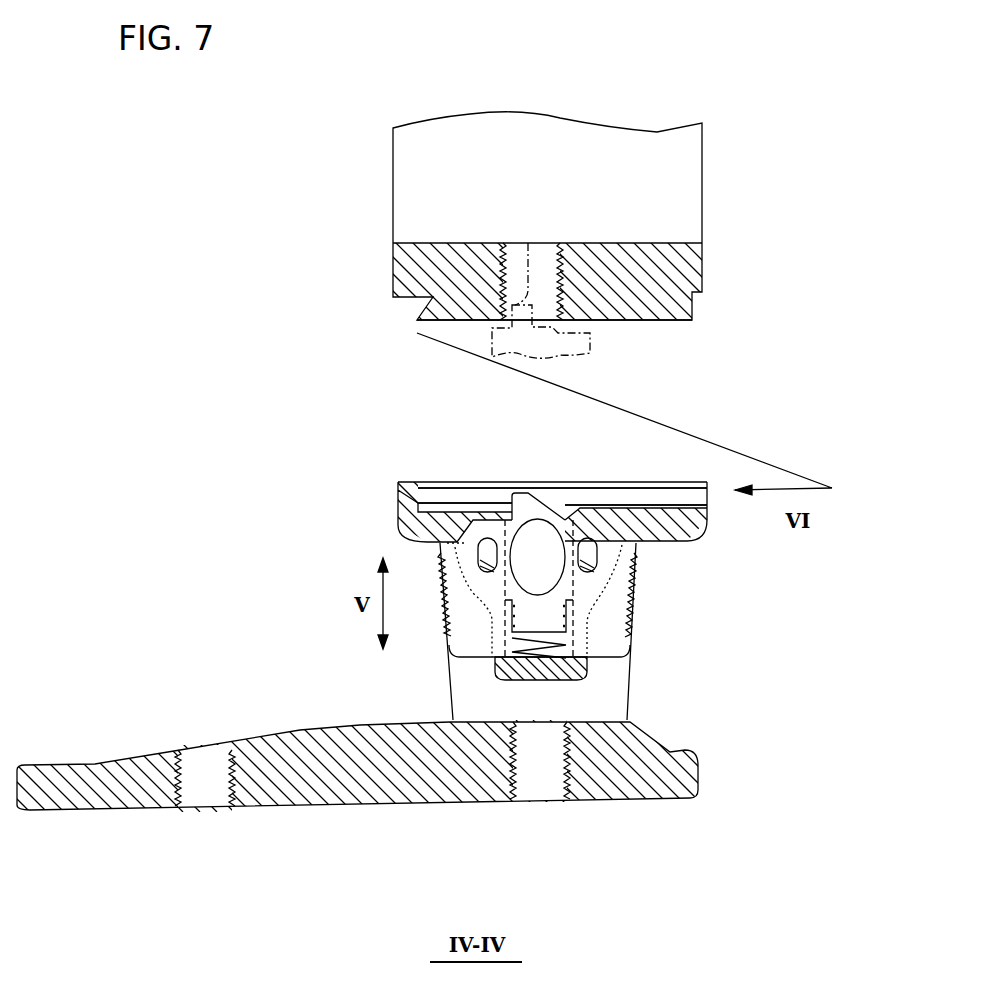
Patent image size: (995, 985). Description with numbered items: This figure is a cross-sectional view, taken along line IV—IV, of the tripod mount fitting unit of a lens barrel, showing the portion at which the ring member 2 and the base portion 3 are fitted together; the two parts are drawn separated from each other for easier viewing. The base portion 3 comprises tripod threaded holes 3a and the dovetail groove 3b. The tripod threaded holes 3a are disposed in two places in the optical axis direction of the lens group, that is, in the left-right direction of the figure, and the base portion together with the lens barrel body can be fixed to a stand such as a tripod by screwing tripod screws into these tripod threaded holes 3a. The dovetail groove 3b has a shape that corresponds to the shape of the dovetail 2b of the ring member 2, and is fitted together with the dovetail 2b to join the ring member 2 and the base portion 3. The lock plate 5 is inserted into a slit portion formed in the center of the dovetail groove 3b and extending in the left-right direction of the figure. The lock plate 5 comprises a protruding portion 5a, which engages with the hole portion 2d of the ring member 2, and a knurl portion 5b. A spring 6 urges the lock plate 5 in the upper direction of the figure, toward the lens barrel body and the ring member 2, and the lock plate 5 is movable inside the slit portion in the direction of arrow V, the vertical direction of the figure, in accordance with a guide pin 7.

The ring member 2 is at (665, 283).
The dovetail 2b is at (660, 307).
The hole portion 2d is at (545, 243).
The base portion 3 is at (340, 782).
The tripod threaded holes 3a is at (230, 797).
The dovetail groove 3b is at (468, 497).
The lock plate 5 is at (577, 343).
The protruding portion 5a is at (527, 240).
The knurl portion 5b is at (633, 603).
The spring 6 is at (497, 678).
The guide pin 7 is at (593, 568).